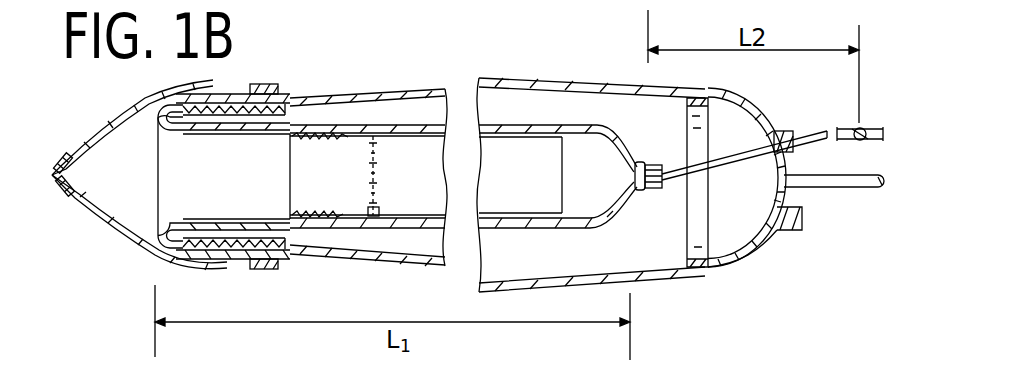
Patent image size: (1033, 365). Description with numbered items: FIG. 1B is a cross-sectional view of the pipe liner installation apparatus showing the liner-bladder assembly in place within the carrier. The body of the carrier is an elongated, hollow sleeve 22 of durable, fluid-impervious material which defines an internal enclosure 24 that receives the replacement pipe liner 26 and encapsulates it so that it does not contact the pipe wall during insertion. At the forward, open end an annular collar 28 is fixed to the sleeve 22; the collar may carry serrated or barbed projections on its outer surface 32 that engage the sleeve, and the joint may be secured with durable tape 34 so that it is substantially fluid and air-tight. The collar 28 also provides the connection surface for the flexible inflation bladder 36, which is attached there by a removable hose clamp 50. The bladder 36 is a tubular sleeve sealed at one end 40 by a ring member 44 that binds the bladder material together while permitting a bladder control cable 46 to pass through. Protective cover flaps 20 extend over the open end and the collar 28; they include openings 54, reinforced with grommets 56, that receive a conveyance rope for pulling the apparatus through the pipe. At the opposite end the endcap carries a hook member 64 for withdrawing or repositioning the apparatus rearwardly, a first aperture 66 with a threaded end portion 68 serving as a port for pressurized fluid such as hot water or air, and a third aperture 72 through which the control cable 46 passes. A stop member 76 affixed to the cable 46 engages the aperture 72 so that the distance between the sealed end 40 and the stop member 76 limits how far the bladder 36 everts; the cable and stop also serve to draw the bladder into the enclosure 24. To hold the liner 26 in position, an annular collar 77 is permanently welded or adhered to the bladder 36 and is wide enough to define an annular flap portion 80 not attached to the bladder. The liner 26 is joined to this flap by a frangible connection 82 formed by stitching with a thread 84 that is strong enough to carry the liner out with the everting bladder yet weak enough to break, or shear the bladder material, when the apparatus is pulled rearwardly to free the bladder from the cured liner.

The protective cover flaps 20 is at (120, 238).
The sleeve 22 is at (426, 94).
The internal enclosure 24 is at (528, 86).
The replacement pipe liner 26 is at (533, 213).
The annular collar 28 is at (216, 128).
The outer surface 32 is at (276, 92).
The tape 34 is at (270, 270).
The flexible inflation bladder 36 is at (393, 126).
The sealed end 40 is at (660, 190).
The ring member 44 is at (642, 160).
The bladder control cable 46 is at (822, 128).
The hose clamp 50 is at (206, 96).
The openings 54 is at (62, 198).
The grommets 56 is at (76, 158).
The hook member 64 is at (846, 187).
The first aperture 66 is at (784, 236).
The threaded end portion 68 is at (806, 228).
The third aperture 72 is at (784, 131).
The stop member 76 is at (866, 128).
The annular collar 77 is at (335, 139).
The annular flap portion 80 is at (336, 210).
The frangible connection 82 is at (386, 212).
The thread 84 is at (378, 139).